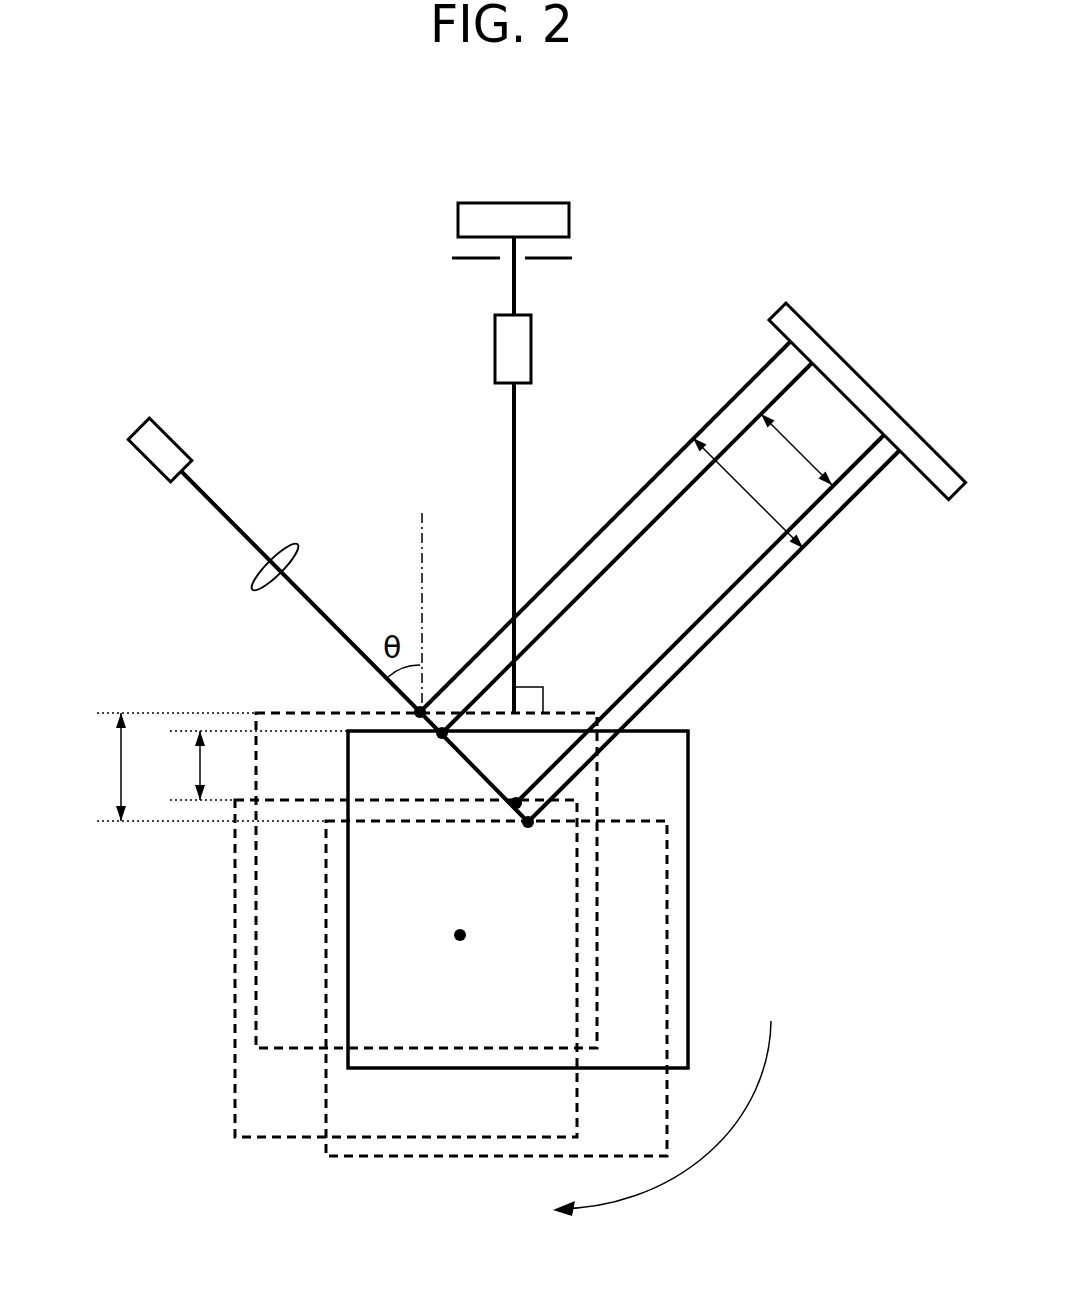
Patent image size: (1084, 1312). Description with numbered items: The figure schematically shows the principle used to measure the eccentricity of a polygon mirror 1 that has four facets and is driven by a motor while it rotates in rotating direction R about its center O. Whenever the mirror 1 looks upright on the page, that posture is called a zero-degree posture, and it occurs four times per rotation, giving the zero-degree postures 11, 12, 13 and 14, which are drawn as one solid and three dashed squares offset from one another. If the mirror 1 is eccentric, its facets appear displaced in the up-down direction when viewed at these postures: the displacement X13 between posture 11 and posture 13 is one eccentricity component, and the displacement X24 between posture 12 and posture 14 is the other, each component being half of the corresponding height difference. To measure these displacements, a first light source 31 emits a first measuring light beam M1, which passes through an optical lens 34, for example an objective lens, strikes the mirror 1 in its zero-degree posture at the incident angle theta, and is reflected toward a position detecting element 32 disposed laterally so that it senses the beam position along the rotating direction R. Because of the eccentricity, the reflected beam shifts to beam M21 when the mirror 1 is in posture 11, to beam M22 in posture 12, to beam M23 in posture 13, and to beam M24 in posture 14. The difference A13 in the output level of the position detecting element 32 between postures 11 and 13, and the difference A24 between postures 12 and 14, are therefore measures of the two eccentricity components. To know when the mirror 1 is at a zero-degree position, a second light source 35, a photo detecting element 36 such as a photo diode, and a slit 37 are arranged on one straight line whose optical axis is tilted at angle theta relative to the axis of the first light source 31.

The polygon mirror 1 is at (703, 930).
The 0-degree posture 11 is at (663, 788).
The 0-degree posture 12 is at (634, 867).
The 0-degree posture 13 is at (275, 1113).
The 0-degree posture 14 is at (287, 755).
The first light source 31 is at (165, 440).
The position detecting element 32 is at (840, 373).
The optical lens 34 is at (297, 542).
The second light source 35 is at (522, 355).
The photo detecting element 36 is at (535, 202).
The slit 37 is at (560, 257).
The first measuring light beam M1 is at (330, 613).
The first reflection light beam M21 is at (657, 523).
The first reflection light beam M22 is at (797, 560).
The first reflection light beam M23 is at (740, 587).
The first reflection light beam M24 is at (575, 560).
The output level difference A13 is at (811, 449).
The output level difference A24 is at (746, 493).
The displacement X13 is at (169, 765).
The displacement X24 is at (88, 767).
The rotation center O is at (444, 947).
The rotating direction R is at (673, 1118).